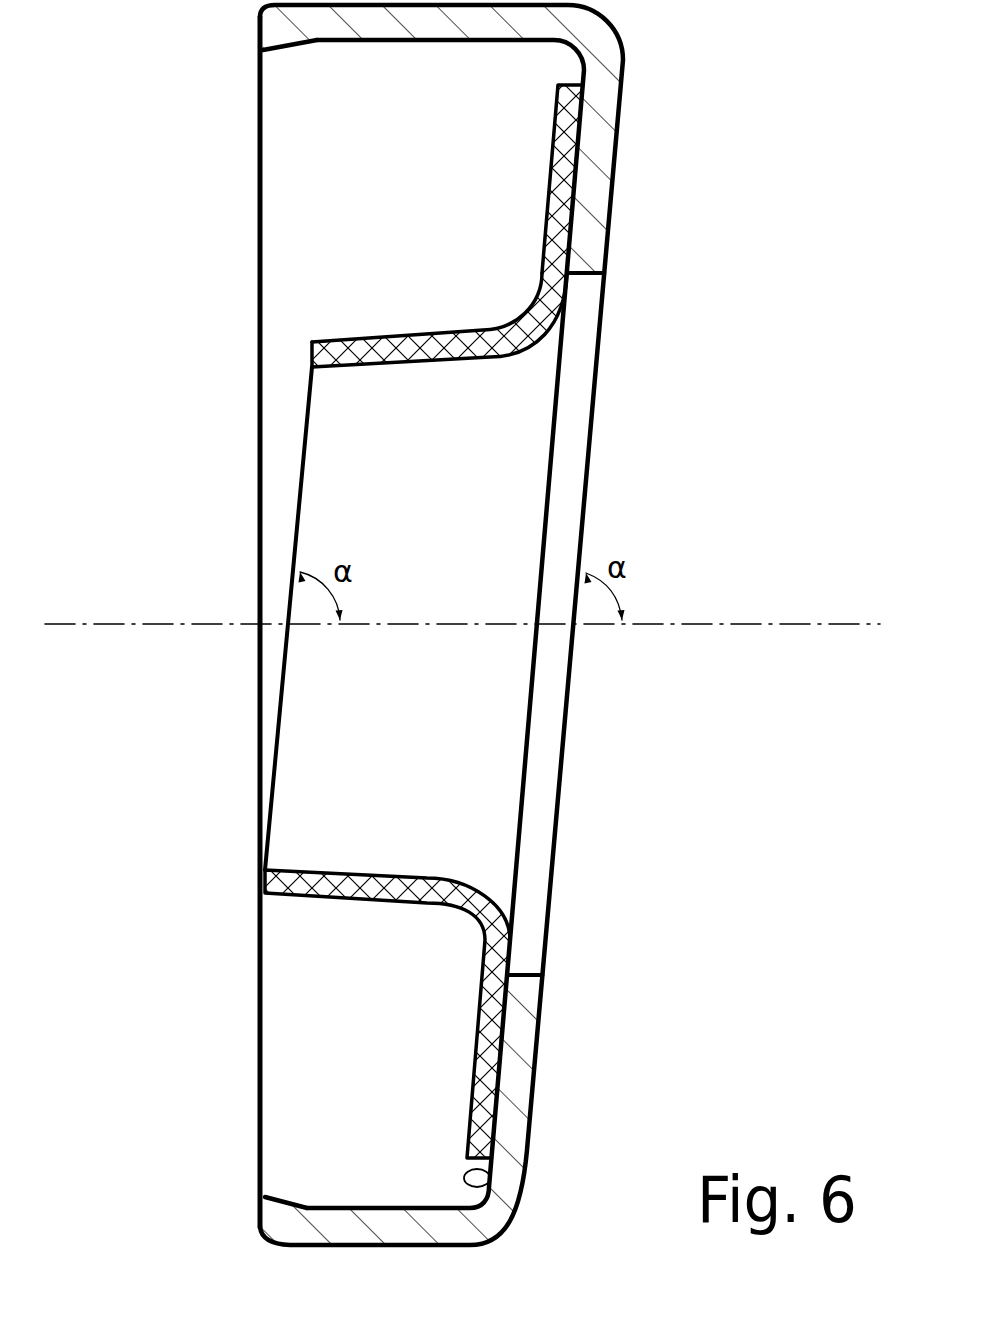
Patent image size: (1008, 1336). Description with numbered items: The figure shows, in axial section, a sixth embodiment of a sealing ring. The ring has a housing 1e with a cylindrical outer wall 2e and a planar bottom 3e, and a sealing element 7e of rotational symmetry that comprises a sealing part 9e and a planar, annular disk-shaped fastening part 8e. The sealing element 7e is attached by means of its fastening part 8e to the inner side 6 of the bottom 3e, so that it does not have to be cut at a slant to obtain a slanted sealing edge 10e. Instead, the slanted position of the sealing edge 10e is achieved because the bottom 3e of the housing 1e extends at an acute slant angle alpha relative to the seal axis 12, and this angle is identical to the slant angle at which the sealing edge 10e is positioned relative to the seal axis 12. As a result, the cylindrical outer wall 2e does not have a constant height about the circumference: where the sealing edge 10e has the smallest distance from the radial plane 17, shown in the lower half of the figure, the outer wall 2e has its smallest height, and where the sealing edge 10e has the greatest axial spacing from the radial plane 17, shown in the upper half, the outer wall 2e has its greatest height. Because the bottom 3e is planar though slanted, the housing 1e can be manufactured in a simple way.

The housing 1e is at (630, 59).
The cylindrical outer wall 2e is at (360, 25).
The bottom 3e is at (583, 238).
The inner side 6 is at (493, 1185).
The sealing element 7e is at (393, 317).
The fastening part 8e is at (566, 160).
The sealing part 9e is at (332, 343).
The sealing edge 10e is at (300, 447).
The seal axis 12 is at (690, 622).
The radial plane 17 is at (257, 700).